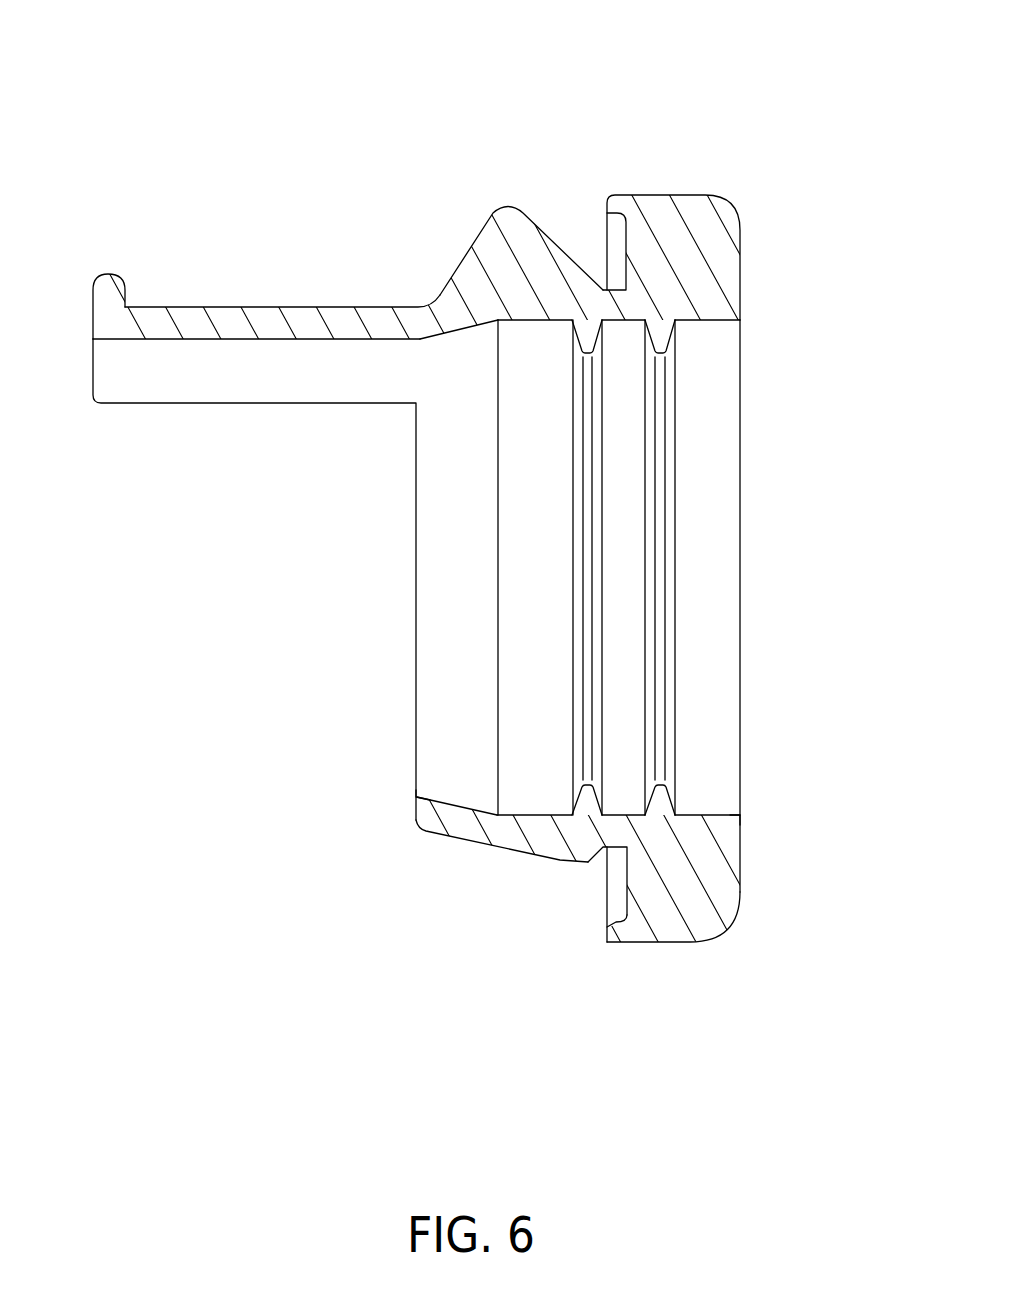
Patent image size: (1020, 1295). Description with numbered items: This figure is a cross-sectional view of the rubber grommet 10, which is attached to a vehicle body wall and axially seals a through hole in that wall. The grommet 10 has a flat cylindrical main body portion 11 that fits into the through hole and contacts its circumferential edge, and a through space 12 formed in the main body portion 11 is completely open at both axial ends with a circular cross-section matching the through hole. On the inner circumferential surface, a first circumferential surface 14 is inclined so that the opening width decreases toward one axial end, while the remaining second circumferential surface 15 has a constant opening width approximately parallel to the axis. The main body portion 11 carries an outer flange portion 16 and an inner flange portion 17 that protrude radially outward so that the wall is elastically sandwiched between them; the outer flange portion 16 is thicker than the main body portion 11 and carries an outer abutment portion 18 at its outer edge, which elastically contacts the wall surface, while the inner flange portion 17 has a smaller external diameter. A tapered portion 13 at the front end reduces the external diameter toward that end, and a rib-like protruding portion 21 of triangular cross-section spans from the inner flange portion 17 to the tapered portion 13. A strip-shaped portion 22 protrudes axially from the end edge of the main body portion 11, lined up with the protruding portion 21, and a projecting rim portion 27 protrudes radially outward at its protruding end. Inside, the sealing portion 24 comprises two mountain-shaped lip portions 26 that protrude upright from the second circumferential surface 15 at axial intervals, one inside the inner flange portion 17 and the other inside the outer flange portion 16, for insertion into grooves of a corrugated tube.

The grommet 10 is at (300, 86).
The main body portion 11 is at (424, 609).
The through space 12 is at (708, 565).
The tapered portion 13 is at (453, 843).
The first circumferential surface 14 is at (445, 796).
The second circumferential surface 15 is at (712, 813).
The outer flange portion 16 is at (705, 932).
The inner flange portion 17 is at (578, 852).
The outer abutment portion 18 is at (612, 935).
The protruding portion 21 is at (507, 217).
The strip-shaped portion 22 is at (223, 313).
The sealing portion 24 is at (623, 300).
The lip portions 26 is at (588, 340).
The projecting rim portion 27 is at (106, 284).